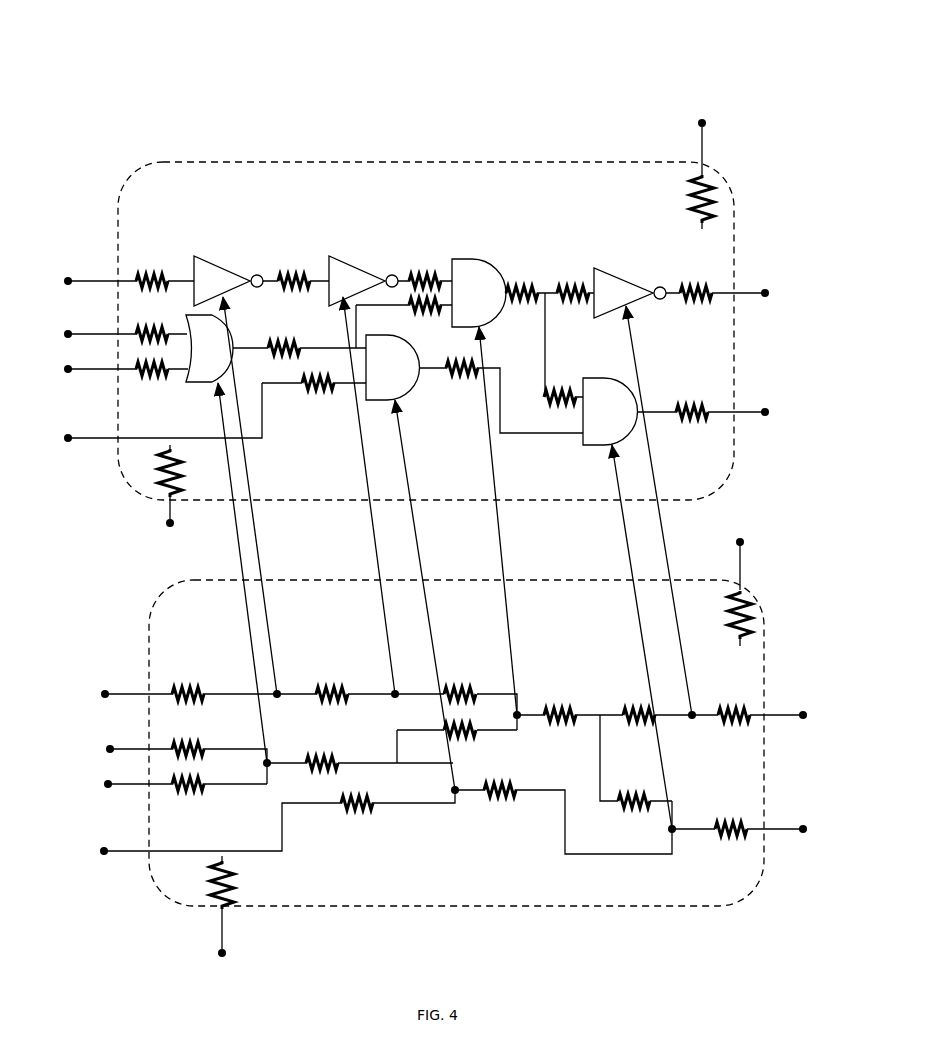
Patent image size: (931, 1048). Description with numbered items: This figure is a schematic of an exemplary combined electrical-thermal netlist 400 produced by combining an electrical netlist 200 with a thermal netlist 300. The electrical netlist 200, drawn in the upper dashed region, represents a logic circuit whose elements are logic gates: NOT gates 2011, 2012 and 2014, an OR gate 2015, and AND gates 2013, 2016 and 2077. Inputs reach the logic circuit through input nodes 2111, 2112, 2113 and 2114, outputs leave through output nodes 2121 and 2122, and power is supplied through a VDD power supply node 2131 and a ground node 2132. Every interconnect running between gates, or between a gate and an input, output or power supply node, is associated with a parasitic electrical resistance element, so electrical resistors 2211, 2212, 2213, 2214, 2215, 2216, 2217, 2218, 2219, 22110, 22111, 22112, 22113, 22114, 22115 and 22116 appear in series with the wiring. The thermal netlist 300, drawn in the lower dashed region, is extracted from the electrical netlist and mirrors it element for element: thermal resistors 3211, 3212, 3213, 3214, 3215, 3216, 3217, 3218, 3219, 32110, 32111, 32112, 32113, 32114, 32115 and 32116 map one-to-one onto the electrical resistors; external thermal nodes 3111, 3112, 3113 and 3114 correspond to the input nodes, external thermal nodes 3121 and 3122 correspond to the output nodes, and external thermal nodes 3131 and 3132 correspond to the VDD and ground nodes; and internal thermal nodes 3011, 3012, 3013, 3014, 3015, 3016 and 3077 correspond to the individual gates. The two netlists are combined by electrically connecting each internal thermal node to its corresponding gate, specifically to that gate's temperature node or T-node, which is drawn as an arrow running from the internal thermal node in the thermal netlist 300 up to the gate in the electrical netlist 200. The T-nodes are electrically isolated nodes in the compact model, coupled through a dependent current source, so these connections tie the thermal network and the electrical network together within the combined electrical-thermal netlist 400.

The combined electrical-thermal netlist 400 is at (345, 74).
The electrical netlist 200 is at (560, 162).
The thermal netlist 300 is at (650, 906).
The input node 2111 is at (68, 281).
The input node 2112 is at (68, 334).
The input node 2113 is at (68, 369).
The input node 2114 is at (68, 438).
The output node 2121 is at (765, 293).
The output node 2122 is at (765, 412).
The VDD power supply node 2131 is at (702, 123).
The ground node 2132 is at (170, 523).
The NOT gate 2011 is at (222, 256).
The NOT gate 2012 is at (357, 256).
The AND gate 2013 is at (475, 259).
The NOT gate 2014 is at (620, 268).
The OR gate 2015 is at (205, 385).
The AND gate 2016 is at (405, 402).
The AND gate 2077 is at (583, 445).
The parasitic electrical resistance element 2211 is at (152, 274).
The parasitic electrical resistance element 2212 is at (294, 274).
The parasitic electrical resistance element 2213 is at (425, 274).
The parasitic electrical resistance element 2214 is at (522, 286).
The parasitic electrical resistance element 2215 is at (573, 286).
The parasitic electrical resistance element 2216 is at (696, 286).
The parasitic electrical resistance element 2217 is at (152, 327).
The parasitic electrical resistance element 2218 is at (152, 376).
The parasitic electrical resistance element 2219 is at (284, 341).
The parasitic electrical resistance element 22110 is at (425, 312).
The parasitic electrical resistance element 22111 is at (304, 390).
The parasitic electrical resistance element 22112 is at (462, 375).
The parasitic electrical resistance element 22113 is at (562, 390).
The parasitic electrical resistance element 22114 is at (692, 405).
The parasitic electrical resistance element 22115 is at (718, 196).
The parasitic electrical resistance element 22116 is at (165, 480).
The external thermal node 3111 is at (105, 694).
The external thermal node 3112 is at (110, 749).
The external thermal node 3113 is at (108, 784).
The external thermal node 3114 is at (104, 851).
The external thermal node 3121 is at (803, 715).
The external thermal node 3122 is at (803, 829).
The external thermal node 3131 is at (740, 542).
The external thermal node 3132 is at (222, 953).
The internal thermal node 3011 is at (277, 700).
The internal thermal node 3012 is at (398, 697).
The internal thermal node 3013 is at (520, 718).
The internal thermal node 3014 is at (695, 718).
The internal thermal node 3015 is at (270, 766).
The internal thermal node 3016 is at (456, 794).
The internal thermal node 3077 is at (672, 829).
The thermal resistor 3211 is at (188, 687).
The thermal resistor 3212 is at (332, 687).
The thermal resistor 3213 is at (460, 687).
The thermal resistor 3214 is at (560, 708).
The thermal resistor 3215 is at (639, 708).
The thermal resistor 3216 is at (734, 708).
The thermal resistor 3217 is at (198, 742).
The thermal resistor 3218 is at (188, 791).
The thermal resistor 3219 is at (322, 756).
The thermal resistor 32110 is at (462, 737).
The thermal resistor 32111 is at (357, 810).
The thermal resistor 32112 is at (500, 797).
The thermal resistor 32113 is at (634, 794).
The thermal resistor 32114 is at (731, 822).
The thermal resistor 32115 is at (748, 612).
The thermal resistor 32116 is at (232, 888).